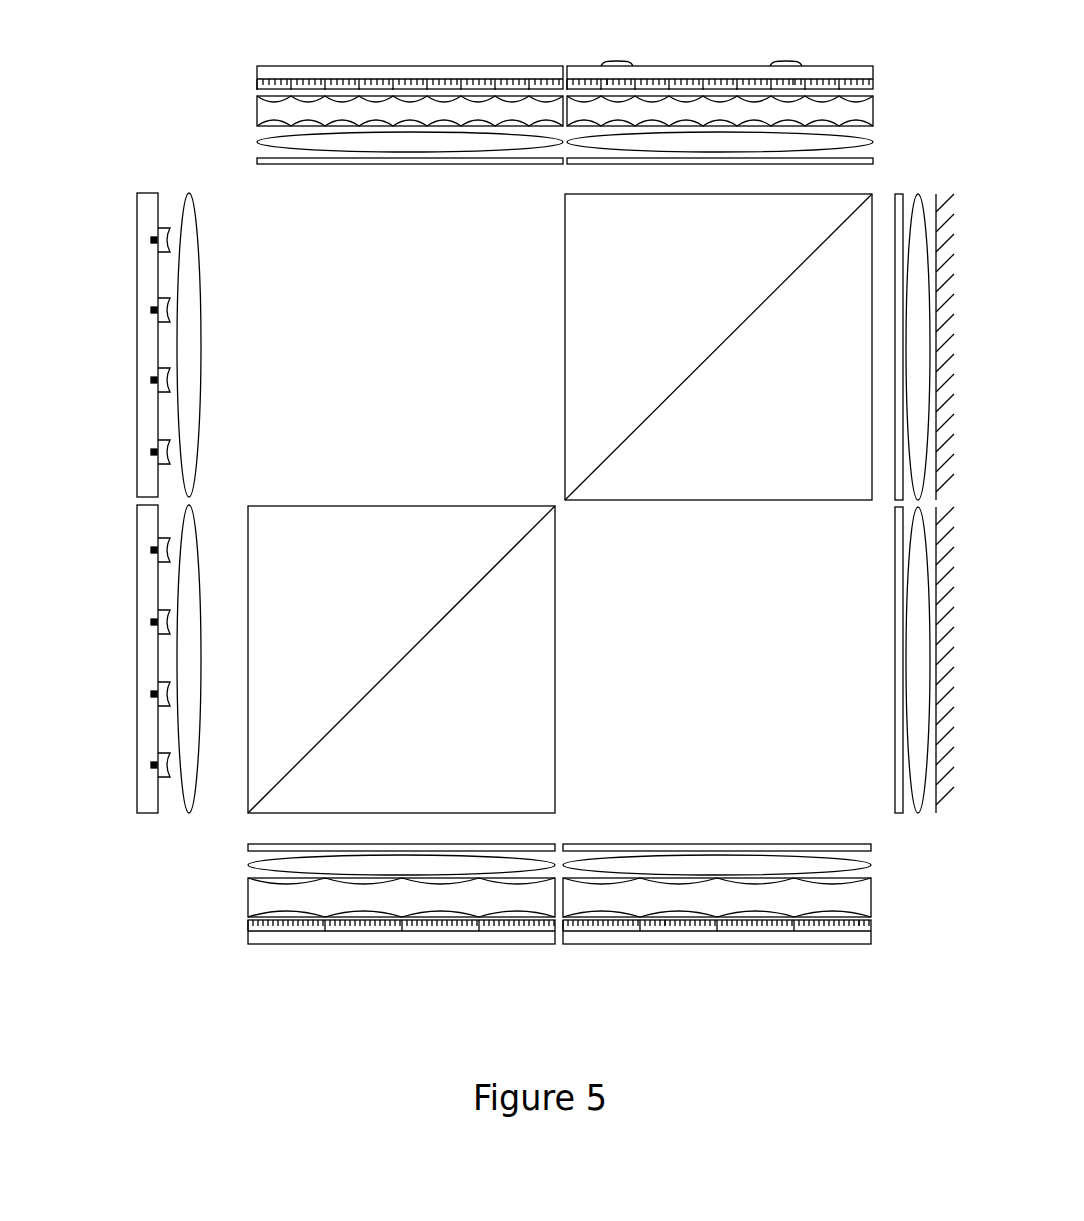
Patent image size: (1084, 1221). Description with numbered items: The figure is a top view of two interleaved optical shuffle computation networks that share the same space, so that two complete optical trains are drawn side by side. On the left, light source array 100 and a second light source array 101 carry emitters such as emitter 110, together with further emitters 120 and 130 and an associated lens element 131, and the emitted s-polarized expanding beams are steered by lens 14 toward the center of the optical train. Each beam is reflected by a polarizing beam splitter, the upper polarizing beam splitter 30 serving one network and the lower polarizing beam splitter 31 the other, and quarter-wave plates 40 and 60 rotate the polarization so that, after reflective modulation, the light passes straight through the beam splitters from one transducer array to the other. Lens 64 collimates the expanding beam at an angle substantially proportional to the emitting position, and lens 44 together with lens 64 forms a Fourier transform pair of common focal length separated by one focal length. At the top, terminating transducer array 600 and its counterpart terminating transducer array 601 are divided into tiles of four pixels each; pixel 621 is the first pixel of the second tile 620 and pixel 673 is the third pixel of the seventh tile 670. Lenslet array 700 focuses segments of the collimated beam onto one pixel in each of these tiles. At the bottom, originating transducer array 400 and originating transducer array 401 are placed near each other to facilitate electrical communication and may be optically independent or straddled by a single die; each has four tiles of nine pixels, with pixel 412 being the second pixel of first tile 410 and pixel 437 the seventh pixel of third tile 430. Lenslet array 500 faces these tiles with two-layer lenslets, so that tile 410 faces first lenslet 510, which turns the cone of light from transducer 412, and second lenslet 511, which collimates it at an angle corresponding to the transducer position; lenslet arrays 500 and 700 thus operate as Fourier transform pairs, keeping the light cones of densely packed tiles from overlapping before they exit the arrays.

The lens 14 is at (189, 193).
The polarizing beam splitter 30 is at (760, 194).
The polarizing beam splitter 31 is at (382, 506).
The quarter-wave plate 40 is at (871, 847).
The lens 44 is at (871, 865).
The quarter-wave plate 60 is at (873, 162).
The lens 64 is at (873, 143).
The light source array 100 is at (148, 193).
The light source array 101 is at (148, 813).
The emitter 110 is at (152, 240).
The light emitting element 120 is at (152, 310).
The light emitting element 130 is at (152, 380).
The collimating lens element 131 is at (162, 386).
The originating transducer array 400 is at (871, 935).
The originating transducer array 401 is at (248, 935).
The first tile 410 is at (865, 948).
The pixel 412 is at (857, 924).
The third tile 430 is at (640, 948).
The pixel 437 is at (664, 924).
The lenslet array 500 is at (761, 904).
The first lenslet 510 is at (855, 912).
The second lenslet 511 is at (840, 887).
The terminating transducer array 600 is at (873, 68).
The terminating transducer array 601 is at (257, 66).
The second tile 620 is at (629, 61).
The pixel 621 is at (606, 81).
The seventh tile 670 is at (780, 61).
The pixel 673 is at (792, 81).
The lenslet array 700 is at (873, 110).